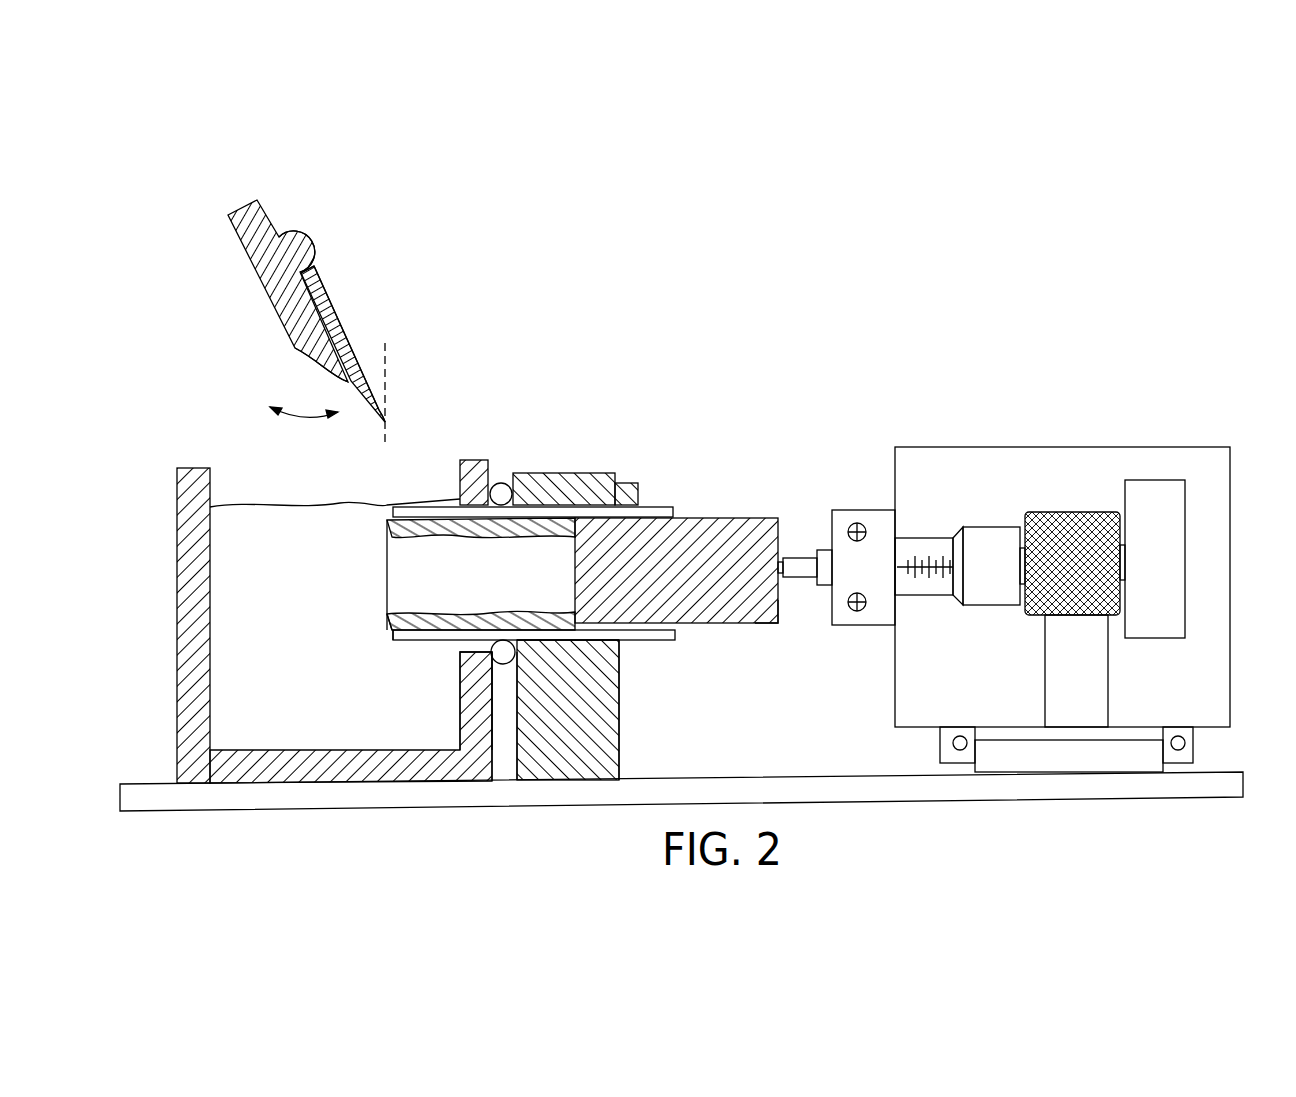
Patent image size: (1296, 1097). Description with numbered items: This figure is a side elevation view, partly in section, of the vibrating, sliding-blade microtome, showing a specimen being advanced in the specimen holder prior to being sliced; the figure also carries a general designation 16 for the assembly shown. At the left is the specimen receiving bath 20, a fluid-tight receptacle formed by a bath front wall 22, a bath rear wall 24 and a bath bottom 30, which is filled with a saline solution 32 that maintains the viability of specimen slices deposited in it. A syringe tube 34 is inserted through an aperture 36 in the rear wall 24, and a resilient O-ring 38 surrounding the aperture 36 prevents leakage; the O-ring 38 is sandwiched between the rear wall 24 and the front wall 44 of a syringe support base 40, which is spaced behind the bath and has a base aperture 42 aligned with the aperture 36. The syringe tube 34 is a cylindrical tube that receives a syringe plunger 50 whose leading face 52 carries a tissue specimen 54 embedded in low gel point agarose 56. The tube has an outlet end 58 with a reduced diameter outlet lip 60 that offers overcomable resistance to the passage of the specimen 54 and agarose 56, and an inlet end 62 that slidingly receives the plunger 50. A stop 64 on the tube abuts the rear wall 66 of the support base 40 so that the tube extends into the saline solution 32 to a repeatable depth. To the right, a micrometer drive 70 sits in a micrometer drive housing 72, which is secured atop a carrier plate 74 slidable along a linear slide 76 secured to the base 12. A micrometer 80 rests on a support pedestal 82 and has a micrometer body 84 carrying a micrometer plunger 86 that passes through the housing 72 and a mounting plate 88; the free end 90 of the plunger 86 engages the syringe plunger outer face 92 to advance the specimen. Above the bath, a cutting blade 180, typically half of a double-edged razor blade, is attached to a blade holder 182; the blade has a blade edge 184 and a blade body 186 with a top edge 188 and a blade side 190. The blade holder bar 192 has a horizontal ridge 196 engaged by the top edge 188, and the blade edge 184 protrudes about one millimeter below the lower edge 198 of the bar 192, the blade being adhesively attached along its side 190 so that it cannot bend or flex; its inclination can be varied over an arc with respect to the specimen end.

The base 12 is at (137, 784).
The test apparatus 16 is at (768, 410).
The specimen receiving bath 20 is at (186, 422).
The bath front wall 22 is at (178, 633).
The bath rear wall 24 is at (492, 482).
The bath bottom 30 is at (310, 770).
The saline solution 32 is at (278, 601).
The syringe tube 34 is at (445, 515).
The aperture 36 is at (470, 650).
The resilient O-ring 38 is at (510, 492).
The syringe support base 40 is at (600, 712).
The base aperture 42 is at (620, 653).
The front wall 44 is at (515, 740).
The syringe plunger 50 is at (738, 518).
The leading face 52 is at (688, 522).
The tissue specimen 54 is at (553, 547).
The low gel point agarose 56 is at (428, 623).
The outlet end 58 is at (388, 622).
The reduced diameter outlet lip 60 is at (392, 636).
The inlet end 62 is at (676, 638).
The stop 64 is at (640, 490).
The rear wall 66 is at (620, 742).
The micrometer drive 70 is at (1065, 418).
The micrometer drive housing 72 is at (918, 447).
The micrometer drive housing carrier plate 74 is at (1190, 735).
The micrometer drive housing linear slide 76 is at (1150, 762).
The micrometer 80 is at (1048, 503).
The support pedestal 82 is at (1098, 685).
The micrometer body 84 is at (1038, 612).
The micrometer plunger 86 is at (913, 537).
The mounting plate 88 is at (843, 510).
The free end 90 is at (787, 555).
The syringe plunger outer face 92 is at (781, 612).
The cutting blade 180 is at (367, 312).
The blade holder 182 is at (287, 202).
The blade edge 184 is at (387, 421).
The blade body 186 is at (350, 352).
The top edge 188 is at (304, 268).
The blade side 190 is at (335, 290).
The blade holder bar 192 is at (247, 241).
The horizontal ridge 196 is at (300, 236).
The lower edge 198 is at (352, 382).